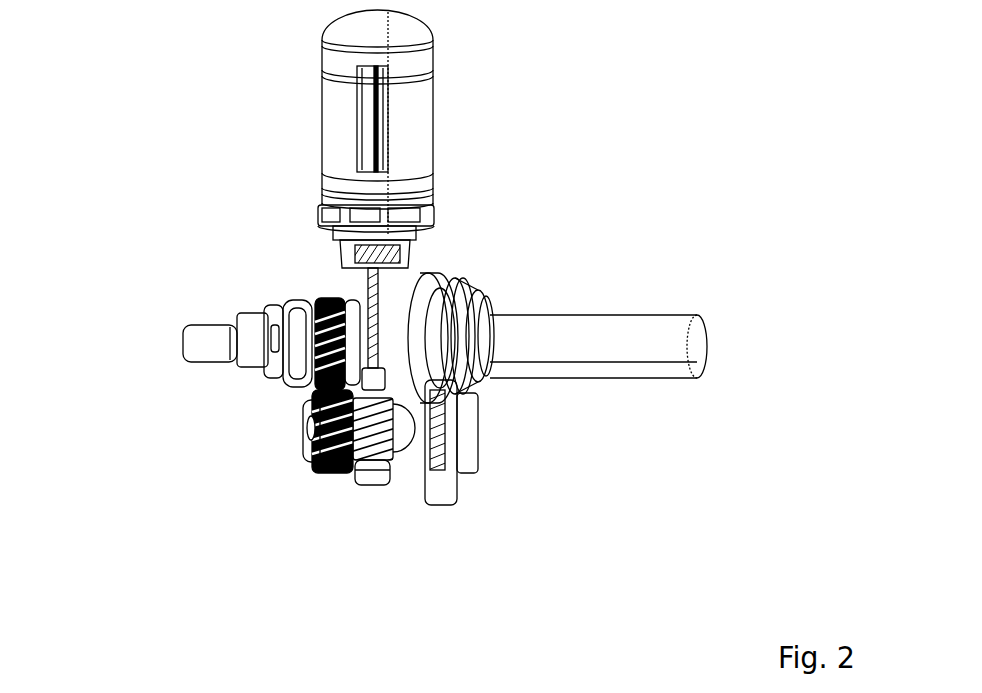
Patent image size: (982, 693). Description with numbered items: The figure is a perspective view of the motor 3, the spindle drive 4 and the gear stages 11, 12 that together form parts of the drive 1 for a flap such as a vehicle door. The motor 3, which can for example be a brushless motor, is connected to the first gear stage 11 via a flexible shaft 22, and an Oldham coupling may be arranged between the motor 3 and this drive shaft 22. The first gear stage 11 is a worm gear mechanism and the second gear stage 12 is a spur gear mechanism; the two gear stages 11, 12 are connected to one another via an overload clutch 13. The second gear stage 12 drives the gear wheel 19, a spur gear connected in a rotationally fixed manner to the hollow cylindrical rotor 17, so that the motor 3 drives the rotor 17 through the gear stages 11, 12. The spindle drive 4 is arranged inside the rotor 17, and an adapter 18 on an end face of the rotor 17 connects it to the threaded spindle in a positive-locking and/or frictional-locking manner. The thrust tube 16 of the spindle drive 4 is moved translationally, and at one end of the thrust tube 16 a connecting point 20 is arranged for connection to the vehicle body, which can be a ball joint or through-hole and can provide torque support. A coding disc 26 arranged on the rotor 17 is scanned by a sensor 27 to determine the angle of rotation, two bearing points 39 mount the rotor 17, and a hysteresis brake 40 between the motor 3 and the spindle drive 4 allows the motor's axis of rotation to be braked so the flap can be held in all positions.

The drive 1 is at (663, 75).
The motor 3 is at (337, 115).
The spindle drive 4 is at (578, 392).
The first gear stage 11 is at (373, 462).
The second gear stage 12 is at (320, 473).
The overload clutch 13 is at (395, 417).
The thrust tube 16 is at (252, 342).
The rotor 17 is at (643, 348).
The adapter 18 is at (707, 332).
The gear wheel 19 is at (322, 302).
The connecting point 20 is at (185, 340).
The flexible shaft 22 is at (375, 312).
The coding disc 26 is at (440, 340).
The sensor 27 is at (433, 410).
The bearing points 39 is at (362, 307).
The hysteresis brake 40 is at (443, 220).